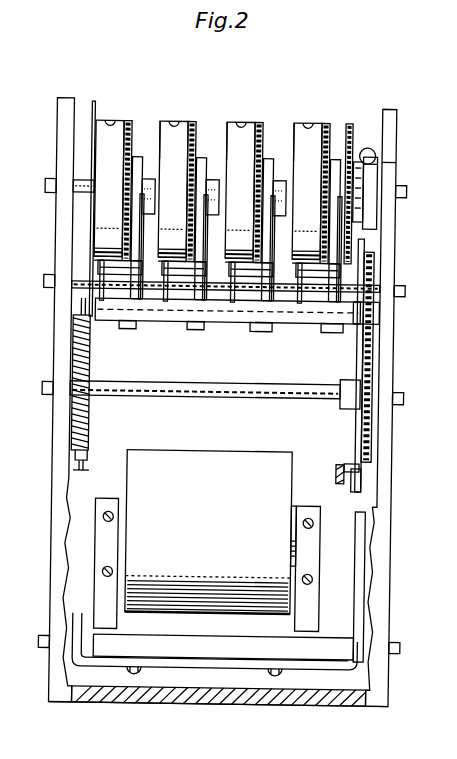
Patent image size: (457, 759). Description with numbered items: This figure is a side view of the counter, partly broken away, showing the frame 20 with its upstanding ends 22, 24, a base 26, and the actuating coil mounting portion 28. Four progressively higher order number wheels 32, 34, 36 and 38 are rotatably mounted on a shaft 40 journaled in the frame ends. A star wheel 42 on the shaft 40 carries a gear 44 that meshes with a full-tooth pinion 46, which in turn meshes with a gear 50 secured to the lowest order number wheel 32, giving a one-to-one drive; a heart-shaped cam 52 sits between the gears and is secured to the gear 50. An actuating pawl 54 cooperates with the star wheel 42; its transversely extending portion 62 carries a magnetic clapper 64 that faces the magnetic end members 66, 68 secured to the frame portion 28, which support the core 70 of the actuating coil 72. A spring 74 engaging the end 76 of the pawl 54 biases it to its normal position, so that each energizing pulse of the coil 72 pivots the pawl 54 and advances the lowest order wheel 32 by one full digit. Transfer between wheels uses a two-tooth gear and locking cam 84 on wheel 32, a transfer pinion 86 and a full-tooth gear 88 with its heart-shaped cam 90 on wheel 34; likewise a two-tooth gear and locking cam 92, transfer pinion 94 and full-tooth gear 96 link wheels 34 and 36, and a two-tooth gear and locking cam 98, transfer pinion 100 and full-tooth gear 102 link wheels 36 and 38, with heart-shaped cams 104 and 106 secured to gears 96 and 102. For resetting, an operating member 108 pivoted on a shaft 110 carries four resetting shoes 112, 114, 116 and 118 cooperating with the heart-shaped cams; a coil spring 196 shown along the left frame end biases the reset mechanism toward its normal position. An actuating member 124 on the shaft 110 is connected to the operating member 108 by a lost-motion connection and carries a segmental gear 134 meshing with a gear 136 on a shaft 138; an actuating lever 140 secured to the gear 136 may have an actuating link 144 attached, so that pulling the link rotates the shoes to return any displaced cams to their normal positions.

The frame 20 is at (400, 170).
The upstanding end 22 is at (400, 243).
The upstanding end 24 is at (53, 240).
The base plate 26 is at (285, 706).
The actuating coil mounting portion 28 is at (56, 702).
The lowest order number wheel 32 is at (305, 122).
The number wheel 34 is at (238, 122).
The number wheel 36 is at (171, 122).
The number wheel 38 is at (106, 122).
The shaft 40 is at (82, 182).
The star wheel 42 is at (386, 112).
The gear 44 is at (358, 158).
The full-tooth pinion 46 is at (335, 332).
The gear 50 is at (324, 124).
The heart-shaped cam 52 is at (347, 124).
The actuating pawl 54 is at (374, 584).
The transversely extending portion 62 is at (176, 670).
The magnetic clapper 64 is at (215, 660).
The magnetic end member 66 is at (97, 578).
The magnetic end member 68 is at (316, 566).
The core 70 is at (295, 507).
The actuating coil 72 is at (208, 532).
The spring 74 is at (372, 150).
The end 76 is at (374, 183).
The two tooth gear and locking cam 84 is at (291, 124).
The transfer pinion 86 is at (262, 332).
The full tooth gear 88 is at (257, 124).
The heart-shaped cam 90 is at (266, 170).
The two-tooth gear and locking cam 92 is at (224, 124).
The transfer pinion 94 is at (200, 331).
The full-tooth gear 96 is at (190, 124).
The two-tooth gear and locking cam 98 is at (157, 124).
The transfer pinion 100 is at (128, 331).
The full-tooth gear 102 is at (125, 124).
The heart-shaped cam 104 is at (198, 160).
The heart-shaped cam 106 is at (134, 160).
The operating member 108 is at (165, 312).
The shaft 110 is at (72, 288).
The resetting shoe 112 is at (333, 280).
The resetting shoe 114 is at (267, 250).
The resetting shoe 116 is at (198, 288).
The resetting shoe 118 is at (138, 265).
The actuating member 124 is at (378, 312).
The segmental gear 134 is at (362, 264).
The gear 136 is at (372, 357).
The shaft 138 is at (246, 397).
The actuating lever 140 is at (345, 468).
The actuating link 144 is at (338, 463).
The coil spring 196 is at (72, 358).